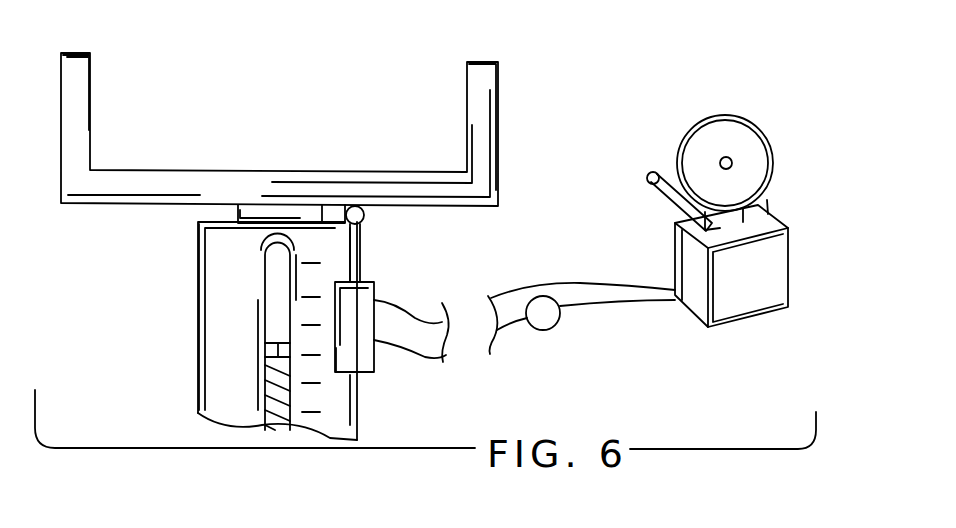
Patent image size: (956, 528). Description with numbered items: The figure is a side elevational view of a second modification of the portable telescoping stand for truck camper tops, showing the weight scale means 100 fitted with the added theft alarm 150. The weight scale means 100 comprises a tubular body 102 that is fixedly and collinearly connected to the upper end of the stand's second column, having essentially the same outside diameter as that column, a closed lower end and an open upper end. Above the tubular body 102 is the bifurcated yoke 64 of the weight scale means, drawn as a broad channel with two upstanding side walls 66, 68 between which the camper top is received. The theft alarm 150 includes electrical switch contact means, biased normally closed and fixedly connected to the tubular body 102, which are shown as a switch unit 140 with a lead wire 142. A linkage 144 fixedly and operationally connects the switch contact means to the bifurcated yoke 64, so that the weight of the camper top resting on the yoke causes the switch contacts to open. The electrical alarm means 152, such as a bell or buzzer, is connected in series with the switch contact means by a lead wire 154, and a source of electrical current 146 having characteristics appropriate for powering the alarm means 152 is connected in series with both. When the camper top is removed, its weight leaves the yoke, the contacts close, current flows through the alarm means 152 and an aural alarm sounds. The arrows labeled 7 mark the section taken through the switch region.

The bifurcated yoke 64 is at (212, 176).
The channel side wall 66 is at (482, 84).
The channel side wall 68 is at (80, 68).
The section line for FIG. 7 is at (353, 205).
The weight scale means 100 is at (188, 337).
The tubular body 102 is at (198, 250).
The sensor unit 140 is at (390, 289).
The sensor lead wire 142 is at (350, 350).
The linkage 144 is at (362, 230).
The source of electrical current 146 is at (540, 333).
The theft alarm 150 is at (578, 348).
The electrical alarm means 152 is at (770, 282).
The alarm lead wire 154 is at (632, 284).